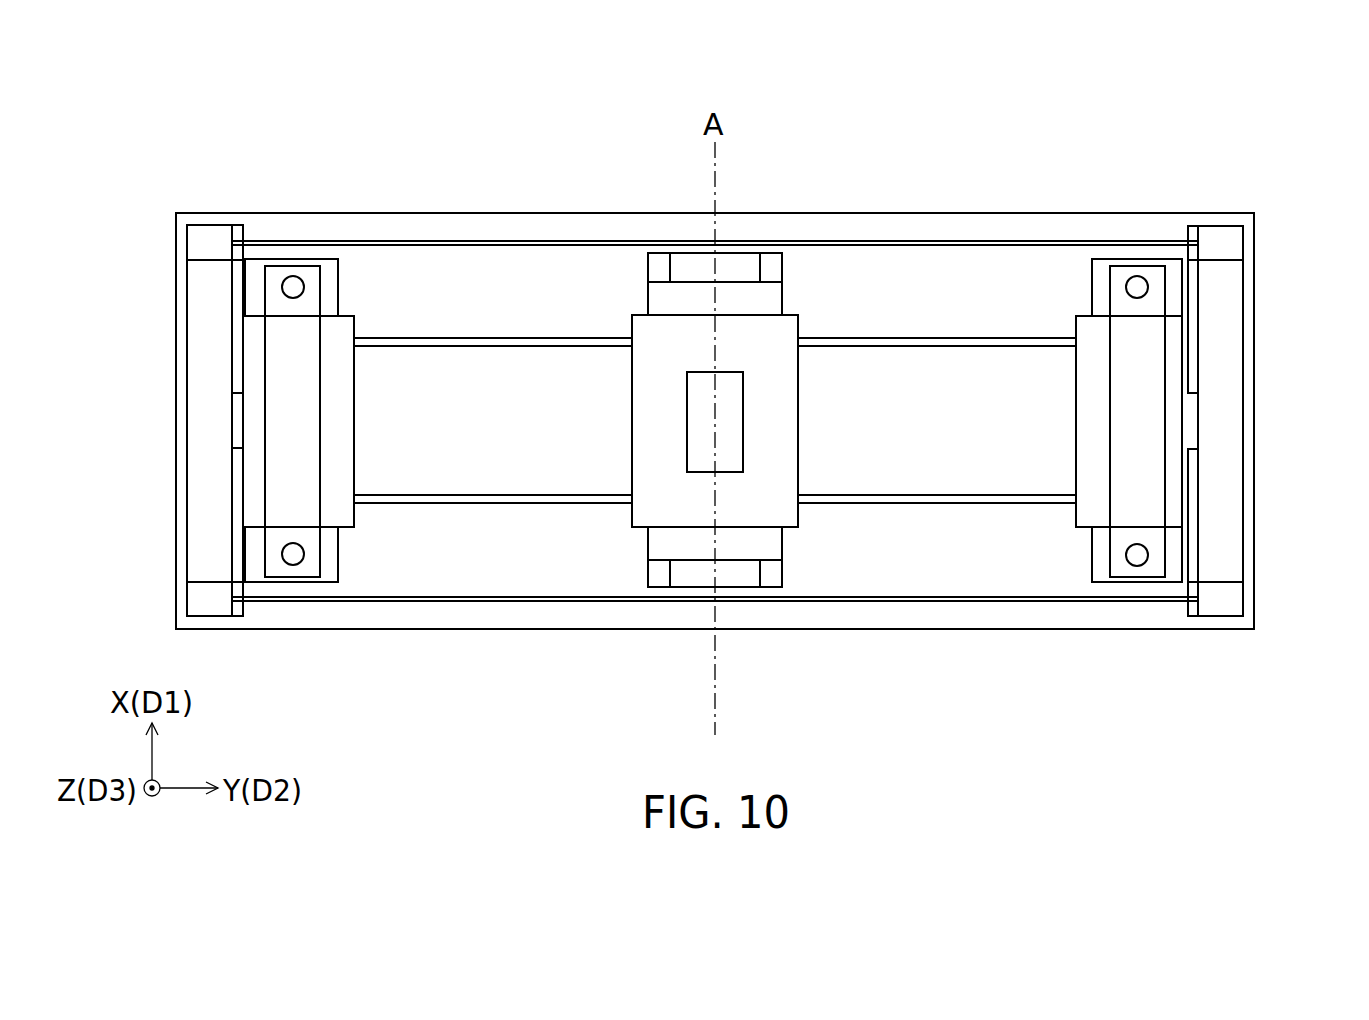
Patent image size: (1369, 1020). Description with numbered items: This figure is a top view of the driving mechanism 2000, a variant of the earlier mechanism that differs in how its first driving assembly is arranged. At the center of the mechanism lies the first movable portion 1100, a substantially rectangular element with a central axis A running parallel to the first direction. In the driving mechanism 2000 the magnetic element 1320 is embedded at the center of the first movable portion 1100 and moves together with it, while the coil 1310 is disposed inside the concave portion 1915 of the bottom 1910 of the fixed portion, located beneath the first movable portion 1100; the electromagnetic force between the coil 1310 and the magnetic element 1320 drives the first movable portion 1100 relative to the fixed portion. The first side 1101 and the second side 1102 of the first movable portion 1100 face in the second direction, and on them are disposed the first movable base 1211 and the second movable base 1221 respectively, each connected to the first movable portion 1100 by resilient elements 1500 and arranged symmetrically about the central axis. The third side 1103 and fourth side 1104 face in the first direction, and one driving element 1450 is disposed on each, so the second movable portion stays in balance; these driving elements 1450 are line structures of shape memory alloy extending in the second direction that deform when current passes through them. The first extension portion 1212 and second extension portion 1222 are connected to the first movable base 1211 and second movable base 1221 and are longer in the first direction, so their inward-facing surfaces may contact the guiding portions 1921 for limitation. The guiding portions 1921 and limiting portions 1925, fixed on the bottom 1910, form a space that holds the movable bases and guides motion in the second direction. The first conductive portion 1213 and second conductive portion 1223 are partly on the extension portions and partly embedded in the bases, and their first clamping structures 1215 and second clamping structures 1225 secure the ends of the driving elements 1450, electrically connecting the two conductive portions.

The driving mechanism 2000 is at (140, 72).
The bottom 1910 is at (945, 629).
The driving elements 1450 is at (838, 241).
The second conductive portion 1223 is at (195, 510).
The second clamping structures 1225 is at (195, 243).
The second extension portion 1222 is at (237, 552).
The first conductive portion 1213 is at (1235, 510).
The first clamping structures 1215 is at (1235, 243).
The first extension portion 1212 is at (1195, 552).
The guiding portions 1921 is at (333, 272).
The limiting portions 1925 is at (275, 418).
The second movable base 1221 is at (347, 328).
The first movable base 1211 is at (1085, 328).
The resilient elements 1500 is at (453, 346).
The first movable portion 1100 is at (648, 390).
The magnetic element 1320 is at (740, 412).
The coil 1310 is at (735, 548).
The concave portion 1915 is at (660, 580).
The third side 1103 is at (770, 313).
The fourth side 1104 is at (770, 530).
The second side 1102 is at (630, 458).
The first side 1101 is at (800, 458).